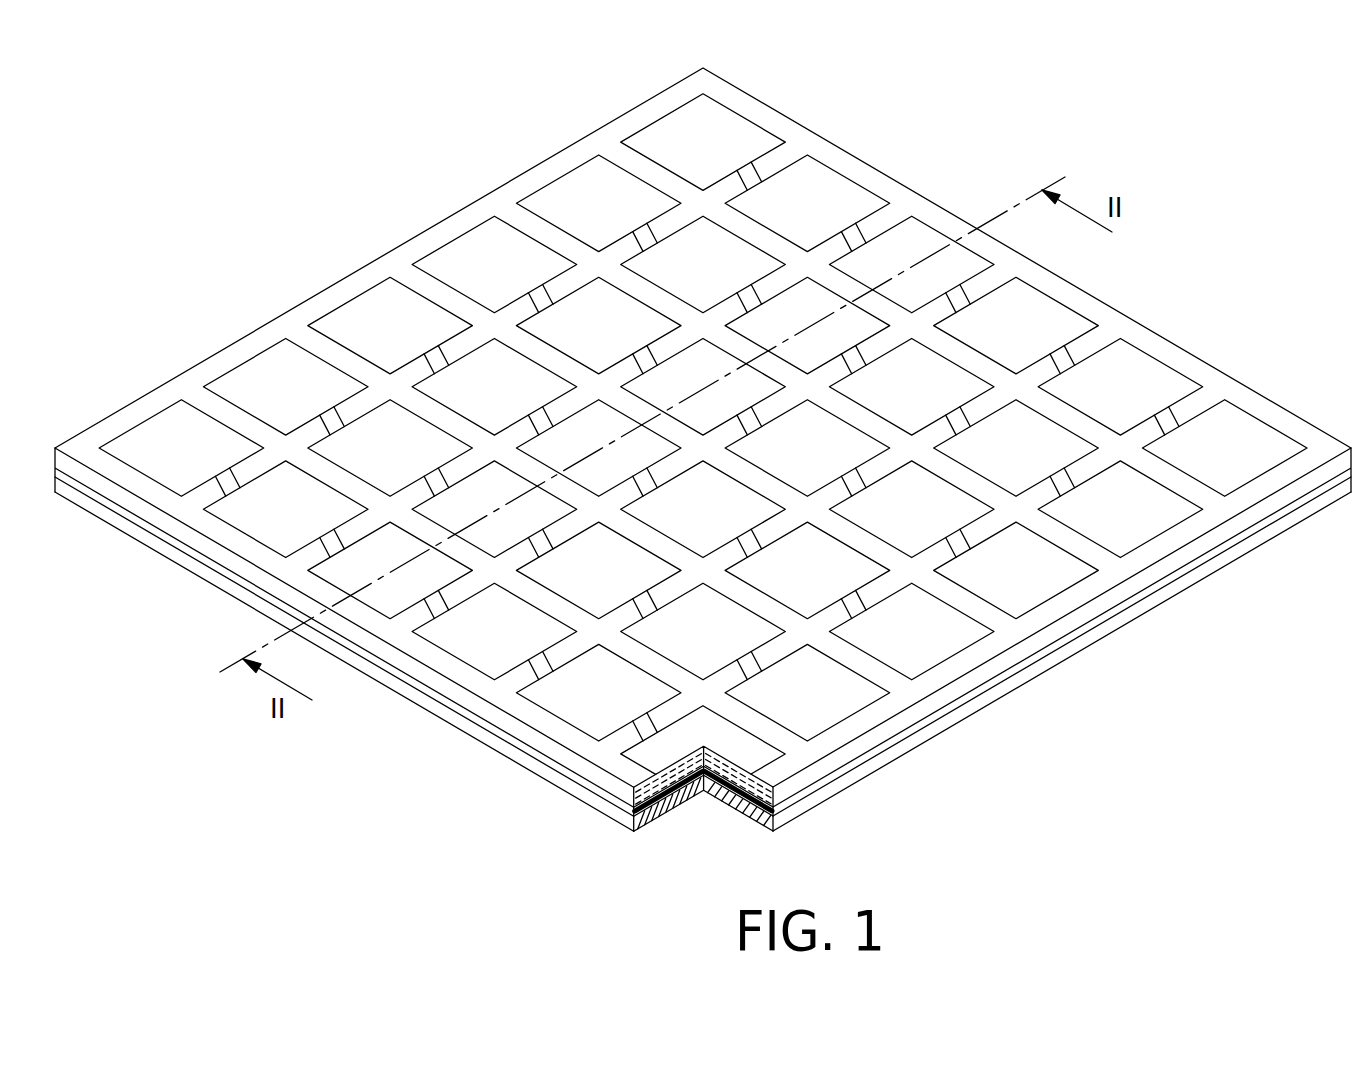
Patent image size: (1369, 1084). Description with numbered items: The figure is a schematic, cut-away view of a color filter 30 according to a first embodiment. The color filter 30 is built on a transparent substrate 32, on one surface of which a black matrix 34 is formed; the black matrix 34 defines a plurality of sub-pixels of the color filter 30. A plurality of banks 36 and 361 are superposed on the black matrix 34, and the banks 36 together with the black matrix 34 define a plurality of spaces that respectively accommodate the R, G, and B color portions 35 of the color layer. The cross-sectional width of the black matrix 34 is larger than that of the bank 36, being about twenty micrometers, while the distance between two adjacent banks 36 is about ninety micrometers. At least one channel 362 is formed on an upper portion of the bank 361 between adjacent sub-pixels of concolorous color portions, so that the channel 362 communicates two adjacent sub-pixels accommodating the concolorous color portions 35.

The color filter 30 is at (999, 123).
The transparent substrate 32 is at (1107, 627).
The black matrix 34 is at (1017, 670).
The color portions 35 is at (762, 753).
The banks 36 is at (947, 697).
The bank 361 is at (518, 673).
The channel 362 is at (553, 665).